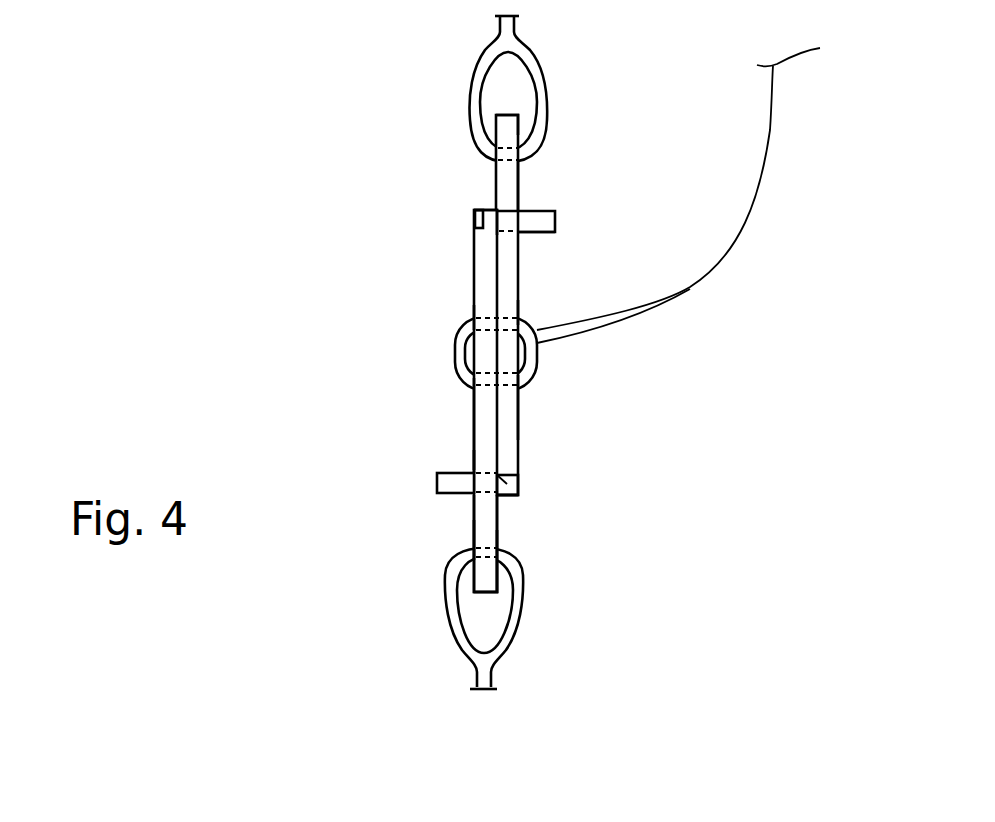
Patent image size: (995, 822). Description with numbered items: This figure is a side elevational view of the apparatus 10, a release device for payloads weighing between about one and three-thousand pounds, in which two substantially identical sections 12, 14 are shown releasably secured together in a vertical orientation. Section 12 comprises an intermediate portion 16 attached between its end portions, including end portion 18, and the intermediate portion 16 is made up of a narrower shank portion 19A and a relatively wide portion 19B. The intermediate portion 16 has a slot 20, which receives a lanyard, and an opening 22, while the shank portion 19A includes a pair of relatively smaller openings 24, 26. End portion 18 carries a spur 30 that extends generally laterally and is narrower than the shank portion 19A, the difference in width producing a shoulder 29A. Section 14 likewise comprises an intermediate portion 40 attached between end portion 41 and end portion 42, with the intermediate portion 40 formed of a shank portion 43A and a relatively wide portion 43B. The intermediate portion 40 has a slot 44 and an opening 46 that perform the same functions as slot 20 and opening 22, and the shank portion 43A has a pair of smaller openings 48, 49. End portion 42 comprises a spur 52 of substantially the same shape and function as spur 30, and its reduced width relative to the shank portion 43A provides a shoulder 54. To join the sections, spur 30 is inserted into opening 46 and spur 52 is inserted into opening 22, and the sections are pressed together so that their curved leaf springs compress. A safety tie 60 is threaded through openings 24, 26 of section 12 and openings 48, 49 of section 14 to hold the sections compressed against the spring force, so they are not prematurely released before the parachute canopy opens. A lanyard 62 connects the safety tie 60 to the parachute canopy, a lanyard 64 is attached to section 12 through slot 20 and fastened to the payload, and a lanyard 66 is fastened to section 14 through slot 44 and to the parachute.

The apparatus 10 is at (250, 184).
The section 12 is at (474, 530).
The section 14 is at (519, 433).
The intermediate portion 16 is at (474, 410).
The end portion 18 is at (487, 208).
The shank portion 19A is at (474, 258).
The relatively wide portion 19B is at (474, 505).
The slot 20 is at (498, 533).
The opening 22 is at (474, 468).
The opening 24 is at (477, 318).
The opening 26 is at (475, 388).
The shoulder 29A is at (482, 210).
The spur 30 is at (536, 233).
The intermediate portion 40 is at (519, 407).
The end portion 41 is at (507, 113).
The end portion 42 is at (507, 498).
The shank portion 43A is at (519, 425).
The relatively wide portion 43B is at (518, 193).
The slot 44 is at (518, 176).
The opening 46 is at (520, 208).
The opening 48 is at (518, 386).
The opening 49 is at (518, 316).
The spur 52 is at (436, 488).
The shoulder 54 is at (518, 496).
The safety tie 60 is at (460, 332).
The lanyard 62 is at (768, 150).
The lanyard 64 is at (490, 670).
The lanyard 66 is at (481, 92).